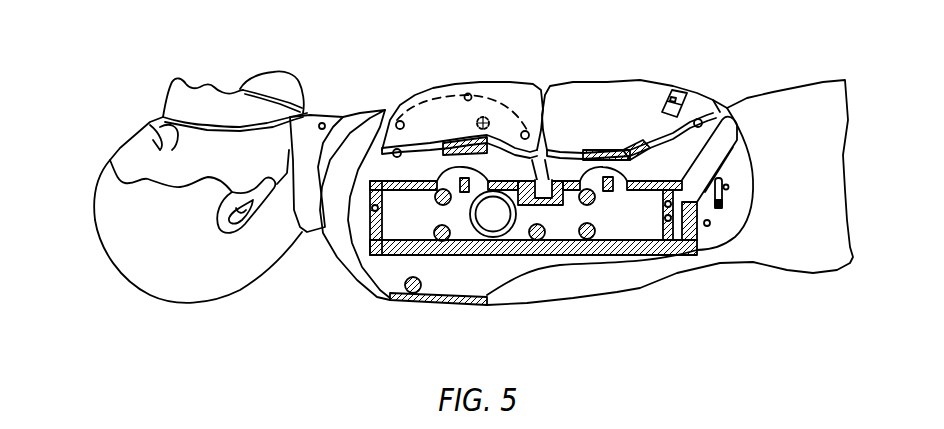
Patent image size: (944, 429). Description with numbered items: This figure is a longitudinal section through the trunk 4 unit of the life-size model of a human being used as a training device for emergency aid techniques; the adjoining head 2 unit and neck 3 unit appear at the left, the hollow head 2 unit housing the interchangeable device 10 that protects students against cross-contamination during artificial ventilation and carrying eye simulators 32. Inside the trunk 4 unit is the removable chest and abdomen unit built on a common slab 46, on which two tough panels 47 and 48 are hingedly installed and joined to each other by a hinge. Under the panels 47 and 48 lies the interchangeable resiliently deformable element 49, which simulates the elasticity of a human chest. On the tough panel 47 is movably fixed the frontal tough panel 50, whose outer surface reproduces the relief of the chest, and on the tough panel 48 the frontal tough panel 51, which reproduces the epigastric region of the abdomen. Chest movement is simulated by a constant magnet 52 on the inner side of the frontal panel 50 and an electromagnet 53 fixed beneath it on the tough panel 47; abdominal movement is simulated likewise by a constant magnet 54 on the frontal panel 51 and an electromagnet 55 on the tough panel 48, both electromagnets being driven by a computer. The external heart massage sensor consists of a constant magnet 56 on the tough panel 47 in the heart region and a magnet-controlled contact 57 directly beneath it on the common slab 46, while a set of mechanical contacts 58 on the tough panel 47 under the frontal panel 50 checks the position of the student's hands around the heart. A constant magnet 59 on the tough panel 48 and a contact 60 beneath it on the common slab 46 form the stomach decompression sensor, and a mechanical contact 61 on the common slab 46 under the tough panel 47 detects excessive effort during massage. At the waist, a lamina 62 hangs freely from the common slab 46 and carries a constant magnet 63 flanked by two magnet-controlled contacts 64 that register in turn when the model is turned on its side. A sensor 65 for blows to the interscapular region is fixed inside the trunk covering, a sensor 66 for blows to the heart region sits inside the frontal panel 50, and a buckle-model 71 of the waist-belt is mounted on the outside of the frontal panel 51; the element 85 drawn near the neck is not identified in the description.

The interchangeable device 10 is at (208, 48).
The head unit 2 is at (84, 257).
The neck unit 3 is at (303, 117).
The eye simulators 32 is at (160, 128).
The band 85 is at (337, 86).
The tough panel 47 is at (395, 165).
The frontal tough panel 50 is at (413, 120).
The constant magnet 52 is at (452, 147).
The mechanical contacts 58 is at (480, 50).
The sensor for blows to the heart region 66 is at (510, 60).
The electromagnet 53 is at (547, 60).
The frontal tough panel 51 is at (725, 62).
The constant magnet 54 is at (598, 148).
The electromagnet 55 is at (625, 147).
The buckle-model of the waist-belt 71 is at (680, 88).
The tough panel 48 is at (773, 108).
The lamina 62 is at (780, 145).
The constant magnet 63 is at (773, 185).
The contacts controlled by a magnet 64 is at (767, 235).
The trunk unit 4 is at (827, 257).
The common slab 46 is at (710, 288).
The sensor for blows to the interscapular region 65 is at (396, 322).
The constant magnet 56 is at (437, 200).
The contact controlled by a magnet 57 is at (437, 325).
The resiliently deformable element 49 is at (486, 320).
The mechanical contact 61 is at (543, 312).
The contact controlled by a magnet 60 is at (590, 305).
The constant magnet 59 is at (628, 215).